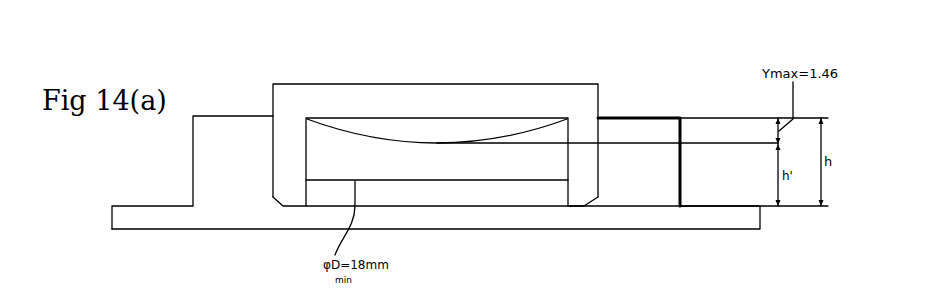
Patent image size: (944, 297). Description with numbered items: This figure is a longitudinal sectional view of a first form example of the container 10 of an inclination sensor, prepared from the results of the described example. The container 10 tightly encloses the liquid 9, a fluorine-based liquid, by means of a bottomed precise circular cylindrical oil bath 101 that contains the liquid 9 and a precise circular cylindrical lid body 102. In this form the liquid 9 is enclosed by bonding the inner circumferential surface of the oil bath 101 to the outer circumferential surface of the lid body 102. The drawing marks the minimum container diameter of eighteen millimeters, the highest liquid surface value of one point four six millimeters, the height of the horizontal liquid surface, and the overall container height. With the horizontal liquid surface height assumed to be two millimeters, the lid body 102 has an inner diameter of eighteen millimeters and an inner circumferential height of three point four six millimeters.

The container 10 is at (630, 62).
The liquid 9 is at (518, 193).
The oil bath 101 is at (635, 218).
The lid body 102 is at (483, 96).